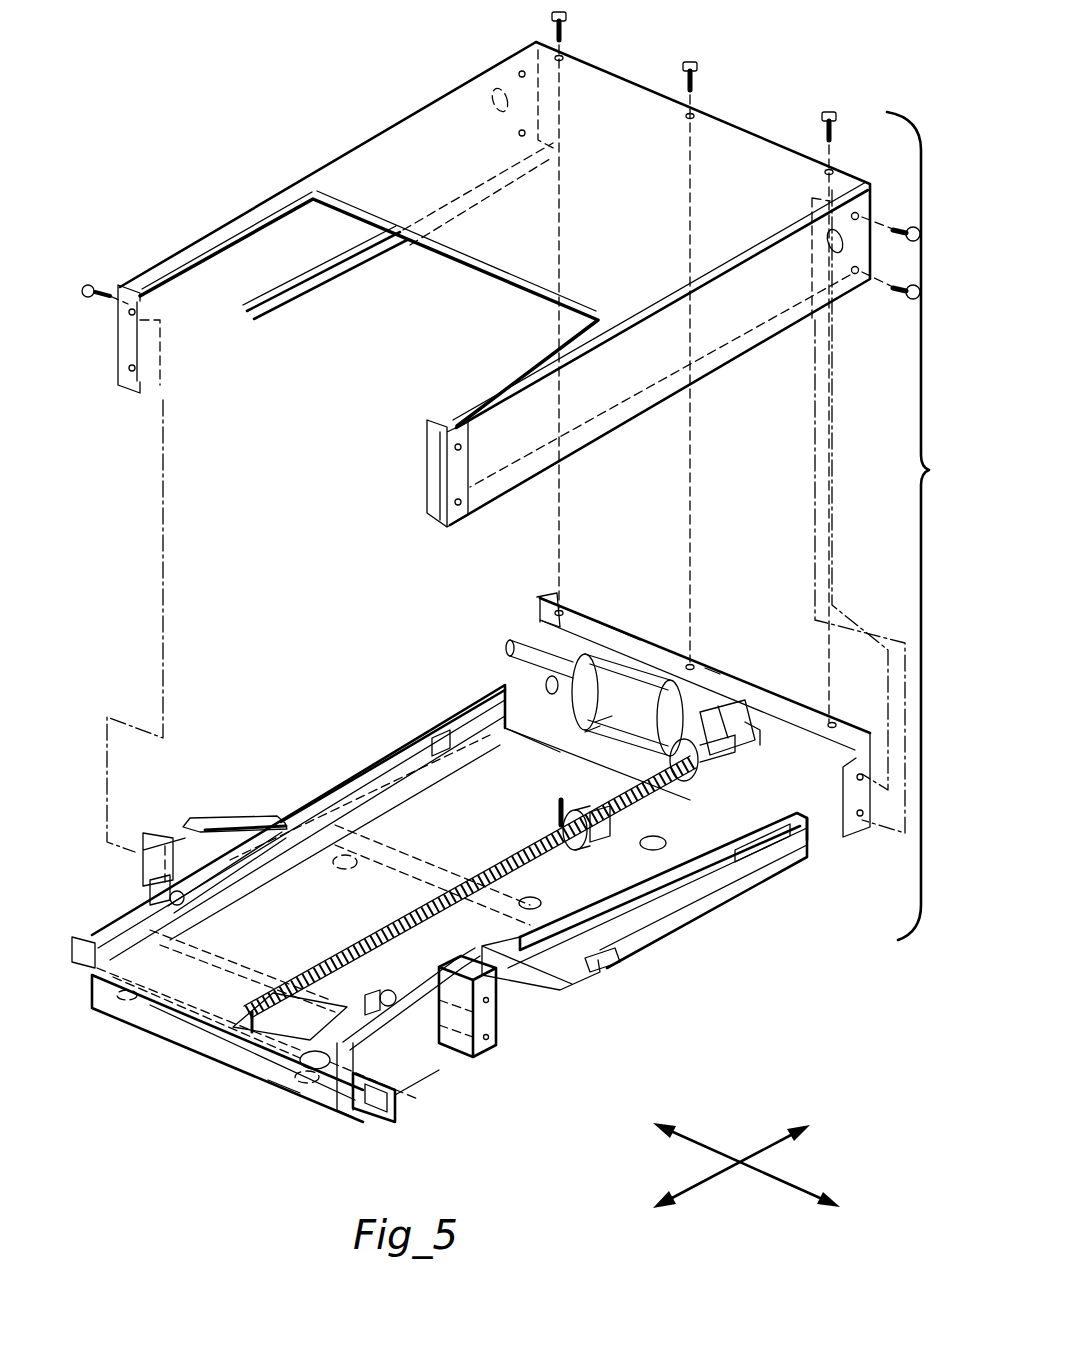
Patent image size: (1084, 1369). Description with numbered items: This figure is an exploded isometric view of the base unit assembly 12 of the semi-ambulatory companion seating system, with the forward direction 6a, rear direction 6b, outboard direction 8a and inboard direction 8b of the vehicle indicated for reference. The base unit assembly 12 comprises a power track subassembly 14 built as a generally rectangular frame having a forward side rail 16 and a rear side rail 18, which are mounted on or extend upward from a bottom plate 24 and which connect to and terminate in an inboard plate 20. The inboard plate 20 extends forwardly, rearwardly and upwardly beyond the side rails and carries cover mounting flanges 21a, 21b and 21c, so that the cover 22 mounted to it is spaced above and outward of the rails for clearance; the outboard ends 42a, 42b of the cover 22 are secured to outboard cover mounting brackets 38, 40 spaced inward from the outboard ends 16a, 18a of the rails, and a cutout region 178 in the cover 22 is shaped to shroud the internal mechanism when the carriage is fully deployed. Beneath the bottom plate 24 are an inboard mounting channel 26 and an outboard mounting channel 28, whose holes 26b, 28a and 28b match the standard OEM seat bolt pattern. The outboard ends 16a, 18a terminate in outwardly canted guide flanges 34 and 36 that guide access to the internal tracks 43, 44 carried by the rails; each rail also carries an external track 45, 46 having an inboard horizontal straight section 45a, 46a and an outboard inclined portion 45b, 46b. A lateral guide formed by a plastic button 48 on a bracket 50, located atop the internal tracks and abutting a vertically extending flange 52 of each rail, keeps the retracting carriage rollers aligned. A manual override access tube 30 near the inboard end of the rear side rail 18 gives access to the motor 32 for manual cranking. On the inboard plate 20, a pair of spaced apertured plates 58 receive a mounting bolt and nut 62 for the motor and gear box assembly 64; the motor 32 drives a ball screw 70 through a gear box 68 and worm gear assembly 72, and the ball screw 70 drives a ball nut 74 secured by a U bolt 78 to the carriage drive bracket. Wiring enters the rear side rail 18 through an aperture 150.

The base unit assembly 12 is at (535, 526).
The power track subassembly 14 is at (166, 1042).
The forward side rail 16 is at (805, 835).
The outboard end of forward side rail 16a is at (318, 1070).
The rear side rail 18 is at (527, 697).
The outboard end of rear side rail 18a is at (92, 978).
The inboard plate 20 is at (773, 727).
The cover mounting flange 21a is at (857, 830).
The cover mounting flange 21b is at (714, 672).
The cover mounting flange 21c is at (537, 608).
The cover 22 is at (640, 199).
The bottom plate 24 is at (517, 814).
The inboard mounting channel 26 is at (615, 965).
The hole 26b is at (340, 870).
The outboard mounting channel 28 is at (235, 1050).
The hole 28a is at (282, 1078).
The hole 28b is at (155, 950).
The manual override access tube 30 is at (565, 617).
The motor 32 is at (625, 660).
The guide flange 34 is at (340, 1112).
The guide flange 36 is at (80, 935).
The outboard cover mounting bracket 38 is at (500, 1030).
The outboard cover mounting bracket 40 is at (152, 832).
The outboard end of cover 42a is at (427, 474).
The outboard end of cover 42b is at (117, 362).
The internal track 43 is at (662, 838).
The internal track 44 is at (405, 790).
The external track 45 is at (682, 938).
The inboard horizontal straight section 45a is at (748, 868).
The outboard inclined portion 45b is at (568, 980).
The external track 46 is at (262, 805).
The inboard horizontal straight section 46a is at (445, 722).
The outboard inclined portion 46b is at (230, 816).
The plastic button 48 is at (183, 905).
The bracket 50 is at (150, 890).
The vertically extending flange 52 is at (432, 1040).
The apertured plates 58 is at (735, 700).
The mounting bolt and nut 62 is at (752, 740).
The motor and gear box assembly 64 is at (597, 717).
The gear box 68 is at (668, 760).
The ball screw 70 is at (490, 874).
The worm gear assembly 72 is at (705, 760).
The ball nut 74 is at (602, 845).
The U bolt 78 is at (574, 850).
The aperture 150 is at (610, 722).
The cutout region 178 is at (392, 351).
The forward direction 6a is at (847, 1223).
The rear direction 6b is at (658, 1110).
The outboard direction 8a is at (653, 1222).
The inboard direction 8b is at (826, 1112).